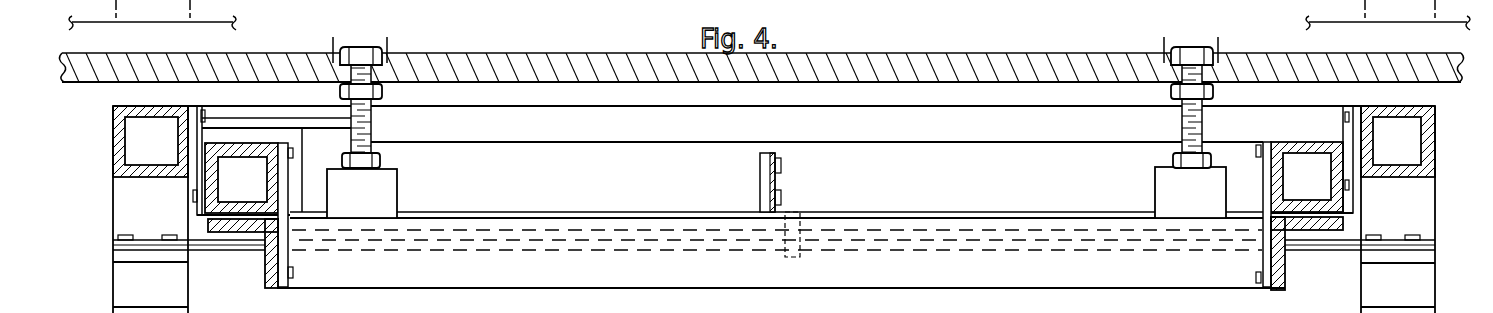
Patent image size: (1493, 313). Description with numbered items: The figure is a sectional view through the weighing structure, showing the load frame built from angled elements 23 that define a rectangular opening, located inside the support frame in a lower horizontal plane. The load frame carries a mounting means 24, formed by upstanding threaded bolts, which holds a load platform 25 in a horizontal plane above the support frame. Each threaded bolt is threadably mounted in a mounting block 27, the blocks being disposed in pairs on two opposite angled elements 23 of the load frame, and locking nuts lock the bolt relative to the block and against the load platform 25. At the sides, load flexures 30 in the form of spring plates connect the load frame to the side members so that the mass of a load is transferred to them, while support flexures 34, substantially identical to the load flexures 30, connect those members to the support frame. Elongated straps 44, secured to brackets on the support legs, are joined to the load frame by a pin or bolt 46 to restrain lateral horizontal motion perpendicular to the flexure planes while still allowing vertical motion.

The angled element 23 is at (268, 282).
The mounting means 24 is at (373, 125).
The load platform 25 is at (482, 78).
The mounting block 27 is at (390, 190).
The load flexure 30 is at (300, 178).
The support flexure 34 is at (192, 182).
The elongated strap 44 is at (213, 245).
The pin or bolt 46 is at (785, 253).